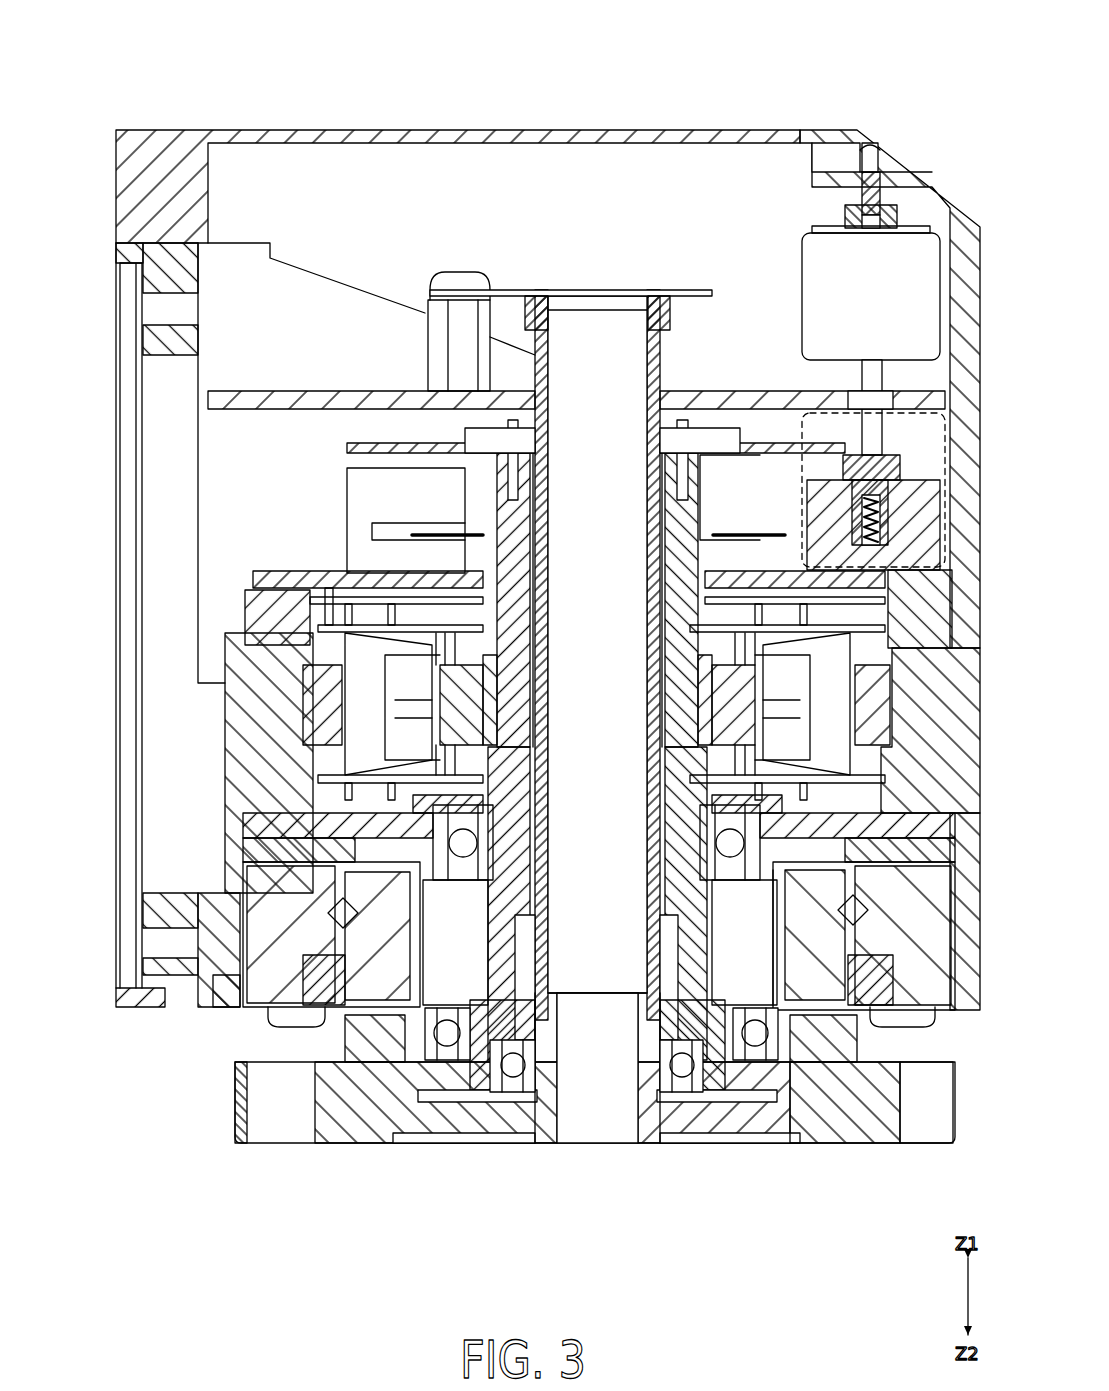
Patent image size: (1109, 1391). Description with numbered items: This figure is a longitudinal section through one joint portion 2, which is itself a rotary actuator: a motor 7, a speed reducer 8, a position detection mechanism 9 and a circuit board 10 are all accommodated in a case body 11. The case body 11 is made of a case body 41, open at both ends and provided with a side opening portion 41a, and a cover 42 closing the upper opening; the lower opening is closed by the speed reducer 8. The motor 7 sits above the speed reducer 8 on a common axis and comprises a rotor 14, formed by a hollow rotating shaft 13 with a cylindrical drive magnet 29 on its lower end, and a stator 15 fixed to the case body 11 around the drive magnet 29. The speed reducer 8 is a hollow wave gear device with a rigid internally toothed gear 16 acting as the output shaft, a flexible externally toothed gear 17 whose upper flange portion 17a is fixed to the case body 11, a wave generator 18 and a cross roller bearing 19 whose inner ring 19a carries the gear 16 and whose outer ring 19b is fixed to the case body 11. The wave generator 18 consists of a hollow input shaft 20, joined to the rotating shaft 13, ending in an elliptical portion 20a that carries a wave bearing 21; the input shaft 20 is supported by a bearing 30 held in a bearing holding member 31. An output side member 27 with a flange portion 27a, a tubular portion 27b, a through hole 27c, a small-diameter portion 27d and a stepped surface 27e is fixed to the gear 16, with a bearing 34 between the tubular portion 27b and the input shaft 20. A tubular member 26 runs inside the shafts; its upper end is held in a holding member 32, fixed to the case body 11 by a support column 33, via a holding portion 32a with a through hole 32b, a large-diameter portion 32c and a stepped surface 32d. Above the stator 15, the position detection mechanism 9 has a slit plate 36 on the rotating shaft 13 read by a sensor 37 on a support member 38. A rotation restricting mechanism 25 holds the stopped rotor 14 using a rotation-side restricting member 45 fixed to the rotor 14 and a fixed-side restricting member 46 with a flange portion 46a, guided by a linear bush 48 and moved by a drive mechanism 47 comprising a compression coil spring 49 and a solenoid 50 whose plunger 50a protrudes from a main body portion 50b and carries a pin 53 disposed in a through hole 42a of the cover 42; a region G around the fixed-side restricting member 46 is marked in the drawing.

The joint portion 2 is at (638, 72).
The motor 7 is at (520, 740).
The speed reducer 8 is at (537, 1038).
The position detection mechanism 9 is at (292, 488).
The circuit board 10 is at (265, 391).
The case body 11 is at (159, 665).
The rotating shaft 13 is at (597, 740).
The rotor 14 is at (535, 610).
The stator 15 is at (297, 725).
The rigid internally toothed gear 16 is at (345, 1040).
The flexible externally toothed gear 17 is at (360, 925).
The flange portion 17a is at (243, 848).
The wave generator 18 is at (596, 951).
The cross roller bearing 19 is at (880, 961).
The inner ring 19a is at (773, 928).
The outer ring 19b is at (935, 1010).
The input shaft 20 is at (532, 870).
The elliptical portion 20a is at (478, 1005).
The wave bearing 21 is at (752, 1005).
The rotation restricting mechanism 25 is at (925, 210).
The tubular member 26 is at (662, 378).
The output side member 27 is at (595, 1135).
The flange portion 27a is at (357, 1145).
The tubular portion 27b is at (580, 990).
The through hole 27c is at (642, 1145).
The small-diameter portion 27d is at (655, 990).
The stepped surface 27e is at (655, 1010).
The drive magnet 29 is at (540, 692).
The bearing 30 is at (450, 880).
The bearing holding member 31 is at (243, 820).
The holding member 32 is at (613, 626).
The holding portion 32a is at (661, 314).
The through hole 32b is at (560, 290).
The large-diameter portion 32c is at (672, 330).
The stepped surface 32d is at (648, 318).
The support column 33 is at (428, 345).
The bearing 34 is at (690, 1095).
The slit plate 36 is at (432, 535).
The sensor 37 is at (347, 533).
The support member 38 is at (272, 571).
The case body 41 is at (152, 1010).
The opening portion 41a is at (120, 988).
The cover 42 is at (315, 130).
The through hole 42a is at (878, 205).
The rotation-side restricting member 45 is at (355, 445).
The fixed-side restricting member 46 is at (888, 456).
The flange portion 46a is at (820, 460).
The drive mechanism 47 is at (818, 266).
The linear bush 48 is at (845, 510).
The compression coil spring 49 is at (860, 520).
The solenoid 50 is at (818, 293).
The plunger 50a is at (882, 382).
The main body portion 50b is at (802, 265).
The pin 53 is at (866, 172).
The gap region G is at (815, 412).